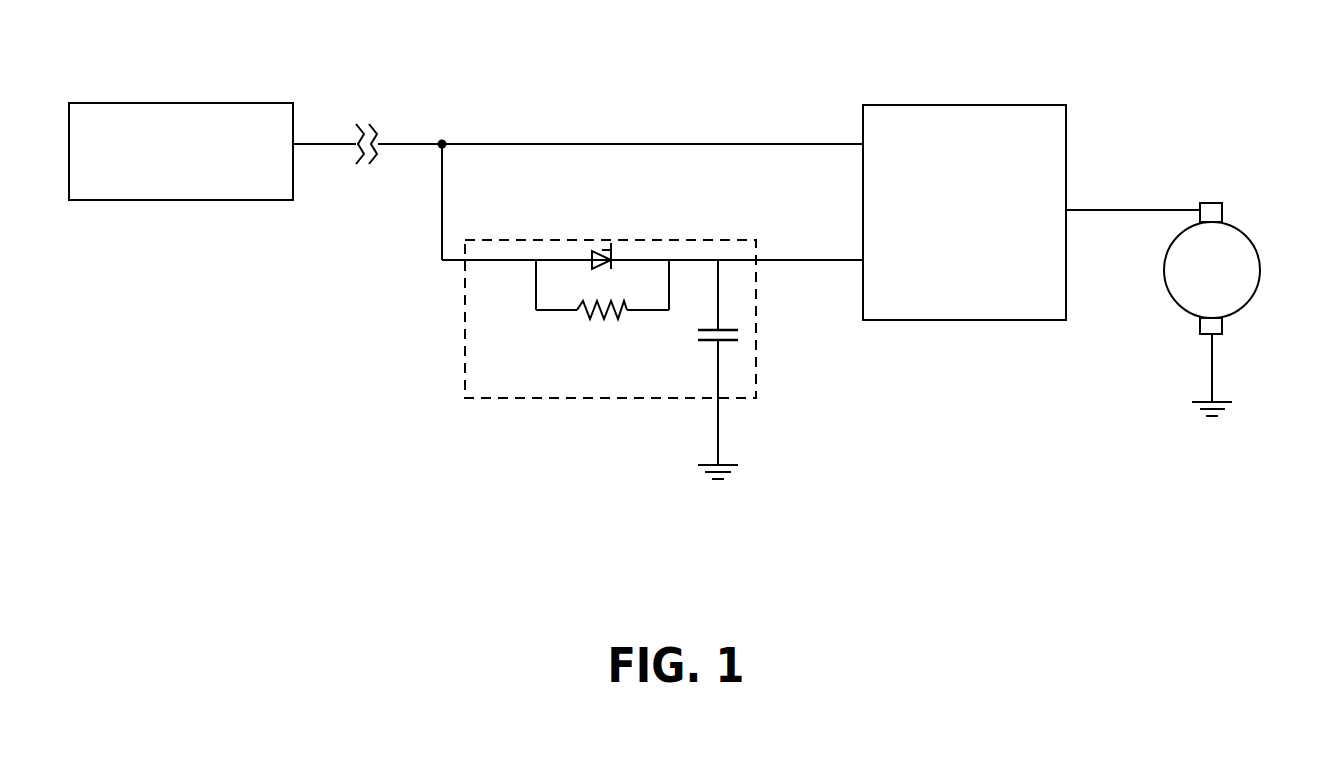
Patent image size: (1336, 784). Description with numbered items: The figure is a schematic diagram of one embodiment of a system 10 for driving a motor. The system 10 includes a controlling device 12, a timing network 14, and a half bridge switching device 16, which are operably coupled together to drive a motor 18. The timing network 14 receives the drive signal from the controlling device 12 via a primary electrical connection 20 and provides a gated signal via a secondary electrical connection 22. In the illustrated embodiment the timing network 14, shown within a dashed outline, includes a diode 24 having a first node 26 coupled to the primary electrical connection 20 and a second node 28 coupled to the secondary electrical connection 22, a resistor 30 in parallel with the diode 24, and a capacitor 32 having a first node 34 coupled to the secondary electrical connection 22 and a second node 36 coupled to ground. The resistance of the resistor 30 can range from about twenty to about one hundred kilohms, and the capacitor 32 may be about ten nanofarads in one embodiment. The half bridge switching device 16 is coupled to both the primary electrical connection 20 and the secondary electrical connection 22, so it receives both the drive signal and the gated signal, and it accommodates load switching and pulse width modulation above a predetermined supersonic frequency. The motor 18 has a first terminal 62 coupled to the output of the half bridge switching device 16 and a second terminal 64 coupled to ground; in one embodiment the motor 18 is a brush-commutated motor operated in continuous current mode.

The system 10 is at (614, 41).
The controlling device 12 is at (180, 96).
The timing network 14 is at (448, 357).
The half bridge switching device 16 is at (982, 97).
The motor 18 is at (1278, 270).
The primary electrical connection 20 is at (412, 138).
The secondary electrical connection 22 is at (802, 244).
The diode 24 is at (606, 247).
The first node 26 is at (562, 259).
The second node 28 is at (640, 260).
The resistor 30 is at (612, 318).
The capacitor 32 is at (740, 349).
The first node 34 is at (718, 300).
The second node 36 is at (718, 380).
The first terminal 62 is at (1217, 203).
The second terminal 64 is at (1222, 334).